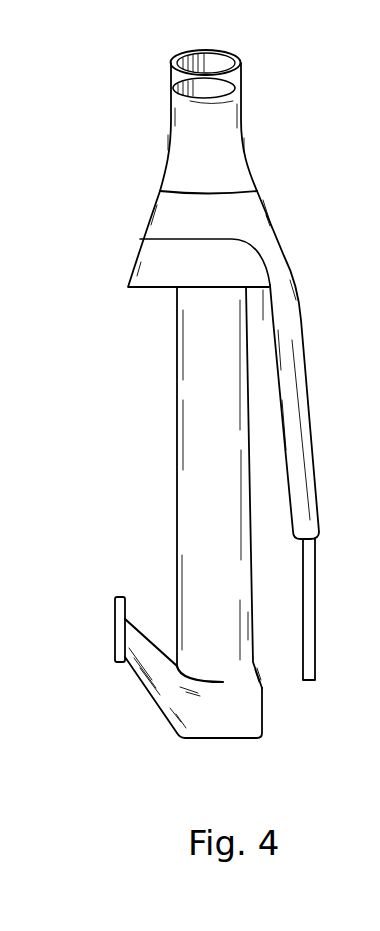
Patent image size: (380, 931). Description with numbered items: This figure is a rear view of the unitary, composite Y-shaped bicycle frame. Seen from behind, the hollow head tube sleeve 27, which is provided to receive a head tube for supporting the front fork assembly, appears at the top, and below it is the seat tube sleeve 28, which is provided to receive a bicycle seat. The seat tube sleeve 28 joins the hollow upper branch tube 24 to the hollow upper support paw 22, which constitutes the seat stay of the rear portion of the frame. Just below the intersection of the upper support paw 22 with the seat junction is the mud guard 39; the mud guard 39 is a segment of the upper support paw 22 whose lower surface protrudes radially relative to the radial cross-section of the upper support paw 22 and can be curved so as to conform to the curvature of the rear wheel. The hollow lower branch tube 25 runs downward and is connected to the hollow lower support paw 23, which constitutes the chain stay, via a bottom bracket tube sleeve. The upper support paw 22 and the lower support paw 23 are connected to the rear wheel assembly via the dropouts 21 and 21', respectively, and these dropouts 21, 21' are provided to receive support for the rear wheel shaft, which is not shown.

The dropout 21 is at (341, 609).
The dropout 21' is at (87, 627).
The upper support paw 22 is at (306, 382).
The lower support paw 23 is at (143, 683).
The upper branch tube 24 is at (177, 342).
The lower branch tube 25 is at (178, 570).
The head tube sleeve 27 is at (238, 55).
The seat tube sleeve 28 is at (238, 83).
The mud guard 39 is at (153, 222).